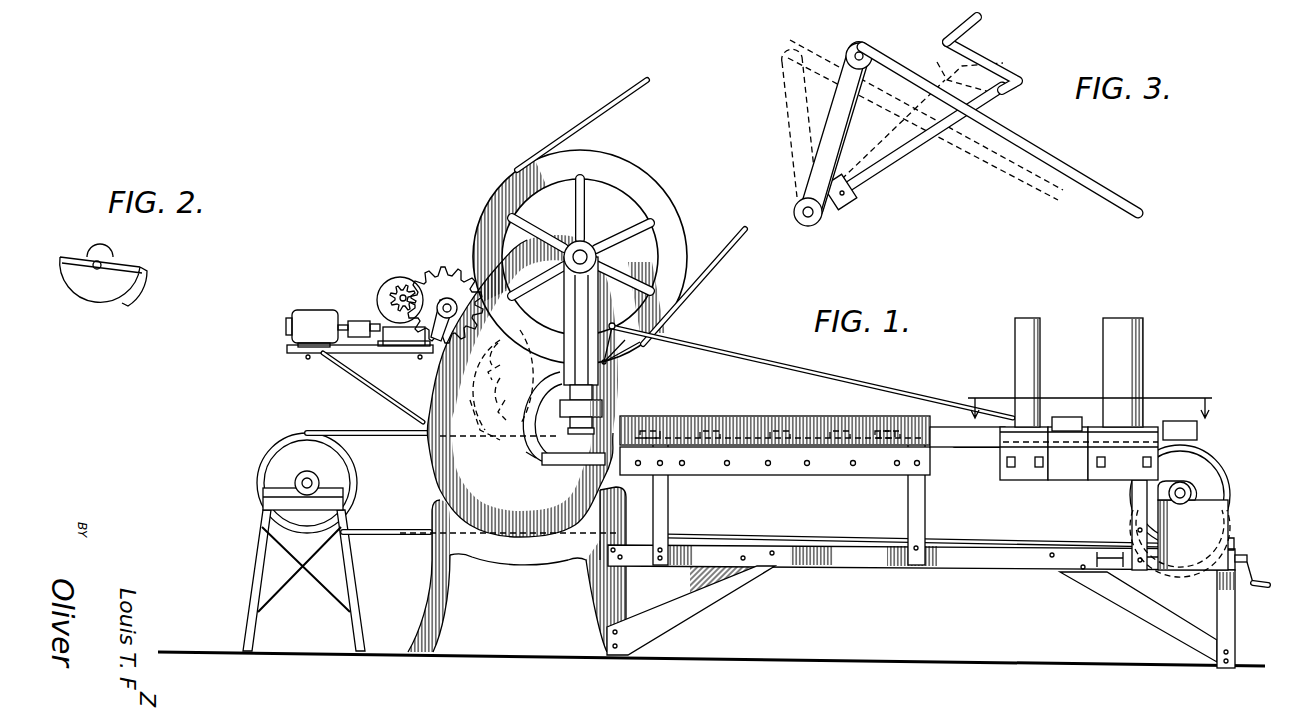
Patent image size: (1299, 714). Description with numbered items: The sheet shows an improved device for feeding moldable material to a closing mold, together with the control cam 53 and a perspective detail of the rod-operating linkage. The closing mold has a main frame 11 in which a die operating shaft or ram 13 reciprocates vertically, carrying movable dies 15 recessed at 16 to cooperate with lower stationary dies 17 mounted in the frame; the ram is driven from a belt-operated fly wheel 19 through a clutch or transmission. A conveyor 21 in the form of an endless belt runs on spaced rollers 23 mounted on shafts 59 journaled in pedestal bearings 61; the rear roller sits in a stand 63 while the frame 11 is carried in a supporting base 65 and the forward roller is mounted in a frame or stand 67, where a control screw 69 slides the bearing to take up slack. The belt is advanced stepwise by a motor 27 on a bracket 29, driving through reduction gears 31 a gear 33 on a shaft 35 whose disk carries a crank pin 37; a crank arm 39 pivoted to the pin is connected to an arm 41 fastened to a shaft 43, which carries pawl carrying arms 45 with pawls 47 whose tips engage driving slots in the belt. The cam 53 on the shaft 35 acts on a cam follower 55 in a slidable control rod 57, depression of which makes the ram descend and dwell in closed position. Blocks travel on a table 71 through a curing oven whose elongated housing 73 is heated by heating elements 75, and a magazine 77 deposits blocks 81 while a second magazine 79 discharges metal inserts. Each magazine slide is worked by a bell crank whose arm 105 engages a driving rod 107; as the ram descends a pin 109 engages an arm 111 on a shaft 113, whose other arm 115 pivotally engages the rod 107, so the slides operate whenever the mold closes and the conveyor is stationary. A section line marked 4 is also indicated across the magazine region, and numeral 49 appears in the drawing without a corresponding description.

In FIG. 1, the section line 4- 4 is at (1089, 396).
In FIG. 1, the main frame 11 is at (510, 386).
In FIG. 1, the die operating shaft or ram 13 is at (600, 393).
In FIG. 1, the movable dies 15 is at (605, 411).
In FIG. 1, the recess 16 is at (577, 417).
In FIG. 1, the lower stationary dies 17 is at (568, 449).
In FIG. 1, the fly wheel 19 is at (671, 222).
In FIG. 1, the conveyor 21 is at (362, 433).
In FIG. 1, the rollers 23 is at (352, 467).
In FIG. 1, the motor 27 is at (303, 313).
In FIG. 1, the bracket 29 is at (370, 354).
In FIG. 1, the reduction gears 31 is at (388, 281).
In FIG. 1, the gear 33 is at (426, 282).
In FIG. 1, the shaft 35 is at (450, 308).
In FIG. 1, the crank pin 37 is at (416, 313).
In FIG. 1, the crank arm 39 is at (438, 332).
In FIG. 1, the arm 41 is at (496, 345).
In FIG. 1, the shaft 43 is at (505, 365).
In FIG. 1, the pawl carrying arms 45 is at (500, 380).
In FIG. 1, the pawls 47 is at (526, 452).
In FIG. 1, the cam lobe 49 is at (505, 401).
In FIG. 2, the cam member 53 is at (121, 289).
In FIG. 1, the cam follower 55 is at (456, 277).
In FIG. 1, the slidable control rod 57 is at (566, 256).
In FIG. 1, the shafts 59 is at (1186, 493).
In FIG. 1, the pedestal bearings 61 is at (270, 486).
In FIG. 1, the stand 63 is at (257, 548).
In FIG. 1, the supporting base 65 is at (535, 553).
In FIG. 1, the frame or stand 67 is at (878, 564).
In FIG. 1, the control screw 69 is at (1255, 555).
In FIG. 1, the table 71 is at (614, 444).
In FIG. 1, the elongated housing 73 is at (756, 421).
In FIG. 1, the heating elements 75 is at (700, 466).
In FIG. 1, the magazine 77 is at (1136, 362).
In FIG. 1, the second magazine 79 is at (1036, 364).
In FIG. 1, the blocks 81 is at (640, 434).
In FIG. 1, the arm of the bell crank 105 is at (1052, 420).
In FIG. 1, the driving rod 107 is at (730, 343).
In FIG. 3, the driving rod 107 is at (1057, 161).
In FIG. 3, the pin 109 is at (980, 29).
In FIG. 3, the arm 111 is at (950, 55).
In FIG. 1, the shaft 113 is at (650, 370).
In FIG. 3, the shaft 113 is at (904, 150).
In FIG. 1, the arm 115 is at (630, 352).
In FIG. 3, the arm 115 is at (847, 92).